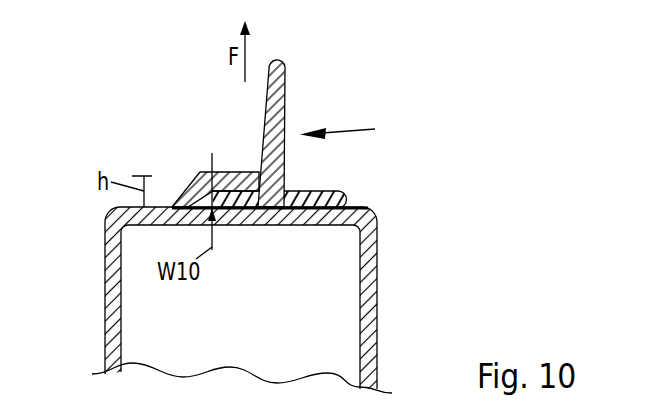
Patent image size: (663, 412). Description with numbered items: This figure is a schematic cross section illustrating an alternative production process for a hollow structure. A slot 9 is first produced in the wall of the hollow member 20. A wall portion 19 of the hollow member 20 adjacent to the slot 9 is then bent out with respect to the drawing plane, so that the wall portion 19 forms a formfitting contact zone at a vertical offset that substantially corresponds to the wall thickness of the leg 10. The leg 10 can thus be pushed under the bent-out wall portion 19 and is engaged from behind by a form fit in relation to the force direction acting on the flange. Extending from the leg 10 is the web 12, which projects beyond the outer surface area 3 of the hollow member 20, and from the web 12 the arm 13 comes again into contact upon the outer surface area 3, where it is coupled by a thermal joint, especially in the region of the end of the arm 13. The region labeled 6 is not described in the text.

The outer surface area 3 is at (362, 206).
The container interior 6 is at (331, 330).
The slot 9 is at (253, 217).
The leg 10 is at (237, 209).
The web 12 is at (280, 104).
The arm 13 is at (327, 191).
The wall portion 19 is at (200, 171).
The hollow member 20 is at (372, 302).